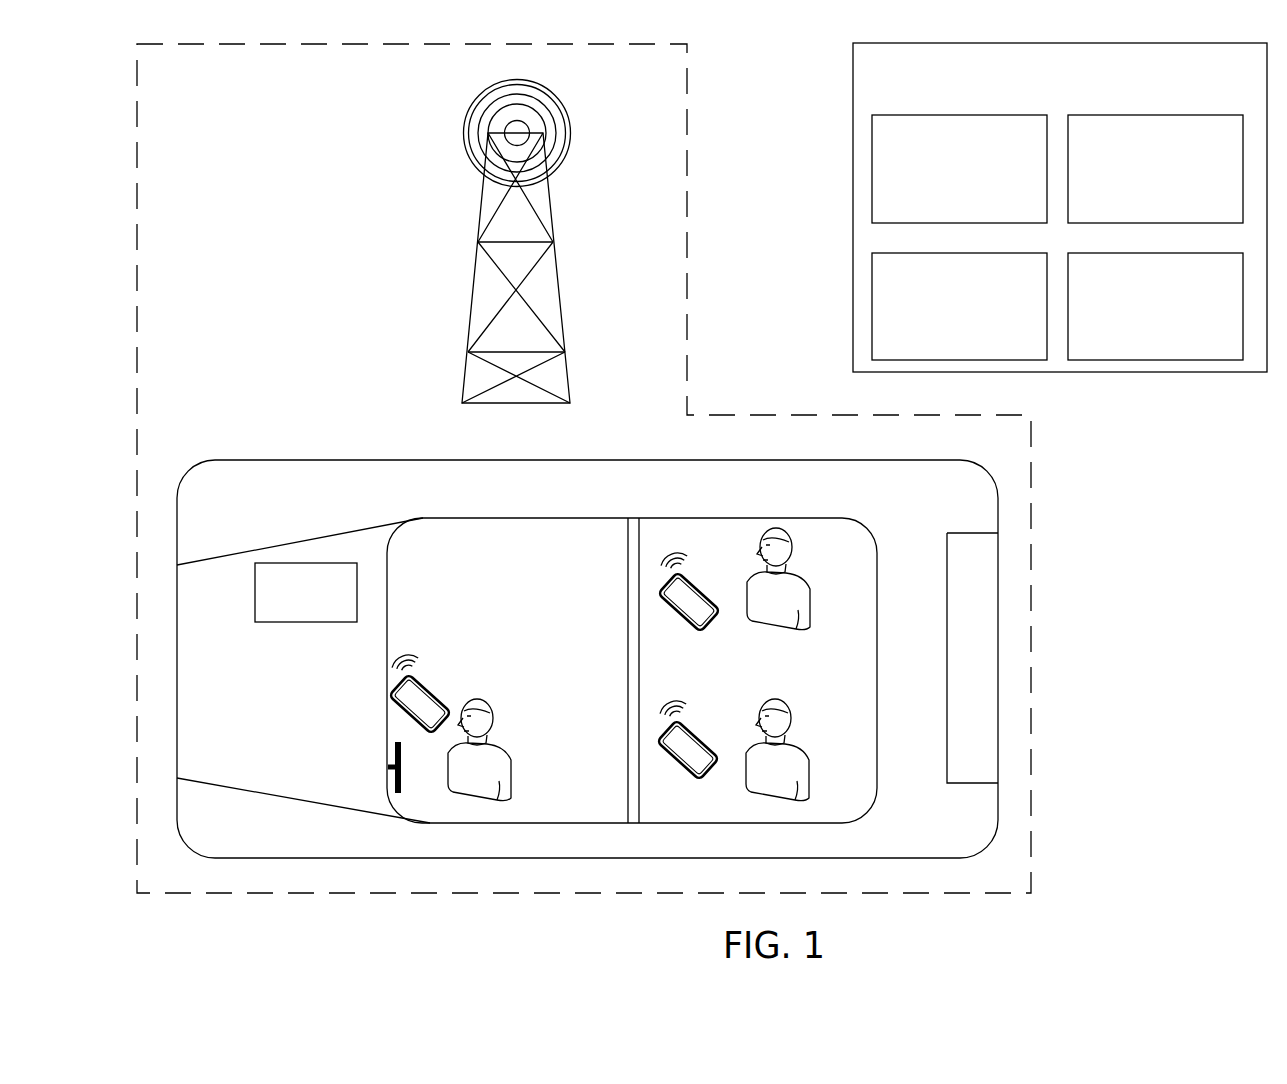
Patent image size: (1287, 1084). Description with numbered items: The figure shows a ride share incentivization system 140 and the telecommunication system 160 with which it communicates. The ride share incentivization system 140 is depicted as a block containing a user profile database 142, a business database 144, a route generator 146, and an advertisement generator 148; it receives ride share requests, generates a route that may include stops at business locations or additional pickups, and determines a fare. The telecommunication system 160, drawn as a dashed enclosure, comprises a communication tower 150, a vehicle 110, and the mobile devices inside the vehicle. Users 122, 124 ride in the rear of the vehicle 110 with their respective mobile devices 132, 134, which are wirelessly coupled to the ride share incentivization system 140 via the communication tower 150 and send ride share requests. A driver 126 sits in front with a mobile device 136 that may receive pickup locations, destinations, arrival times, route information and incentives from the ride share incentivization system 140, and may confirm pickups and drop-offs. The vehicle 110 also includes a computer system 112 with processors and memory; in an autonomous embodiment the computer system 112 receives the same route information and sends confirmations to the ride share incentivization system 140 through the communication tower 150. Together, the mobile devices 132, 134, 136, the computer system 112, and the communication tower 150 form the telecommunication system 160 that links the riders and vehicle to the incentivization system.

The vehicle 110 is at (282, 482).
The computer system 112 is at (324, 604).
The user 122 is at (787, 528).
The user 124 is at (788, 708).
The driver 126 is at (490, 707).
The mobile device 132 is at (657, 593).
The mobile device 134 is at (658, 742).
The mobile device 136 is at (390, 692).
The ride share incentivization system 140 is at (1078, 105).
The user profile database 142 is at (979, 210).
The business database 144 is at (1175, 210).
The route generator 146 is at (979, 348).
The advertisement generator 148 is at (1175, 348).
The communication tower 150 is at (557, 160).
The telecommunication system 160 is at (228, 107).